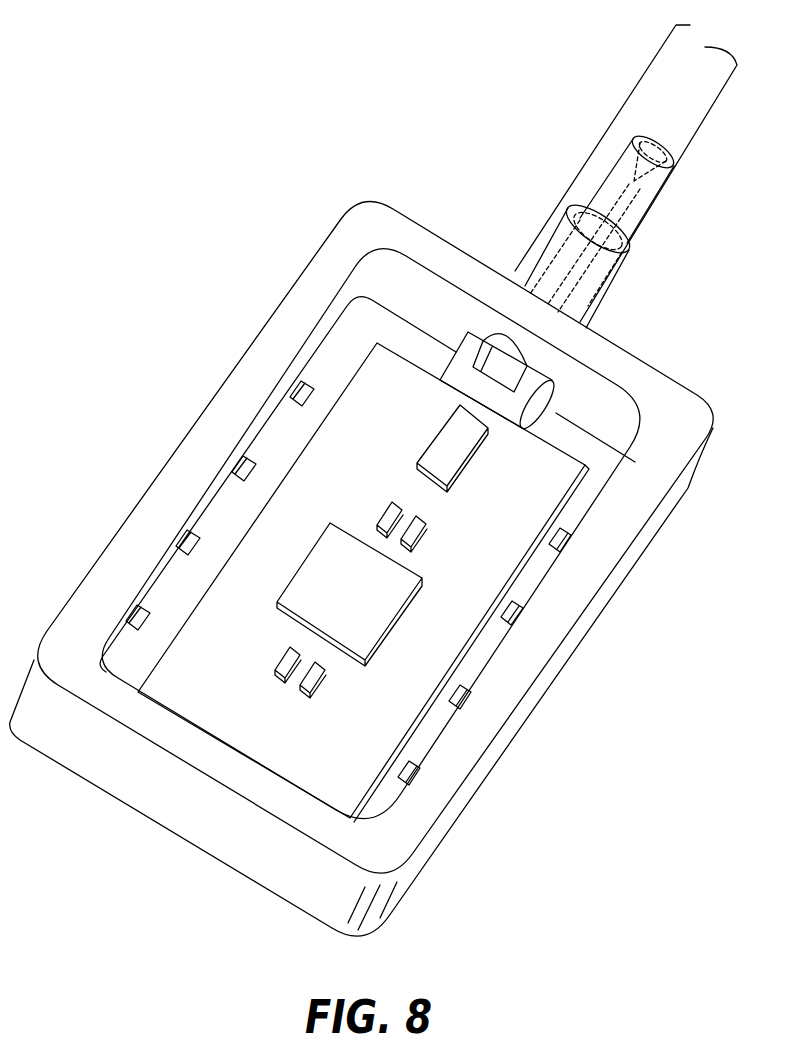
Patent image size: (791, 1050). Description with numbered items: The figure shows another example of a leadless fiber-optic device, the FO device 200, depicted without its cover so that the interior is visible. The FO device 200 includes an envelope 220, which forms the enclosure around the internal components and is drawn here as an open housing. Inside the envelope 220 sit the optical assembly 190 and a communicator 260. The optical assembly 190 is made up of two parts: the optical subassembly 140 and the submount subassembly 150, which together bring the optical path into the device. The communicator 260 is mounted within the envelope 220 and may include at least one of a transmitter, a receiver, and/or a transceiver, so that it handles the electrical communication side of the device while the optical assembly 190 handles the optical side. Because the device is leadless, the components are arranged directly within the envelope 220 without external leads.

The FO device 200 is at (127, 184).
The envelope 220 is at (365, 215).
The communicator 260 is at (357, 378).
The submount subassembly 150 is at (469, 338).
The optical subassembly 140 is at (597, 138).
The optical assembly 190 is at (677, 212).